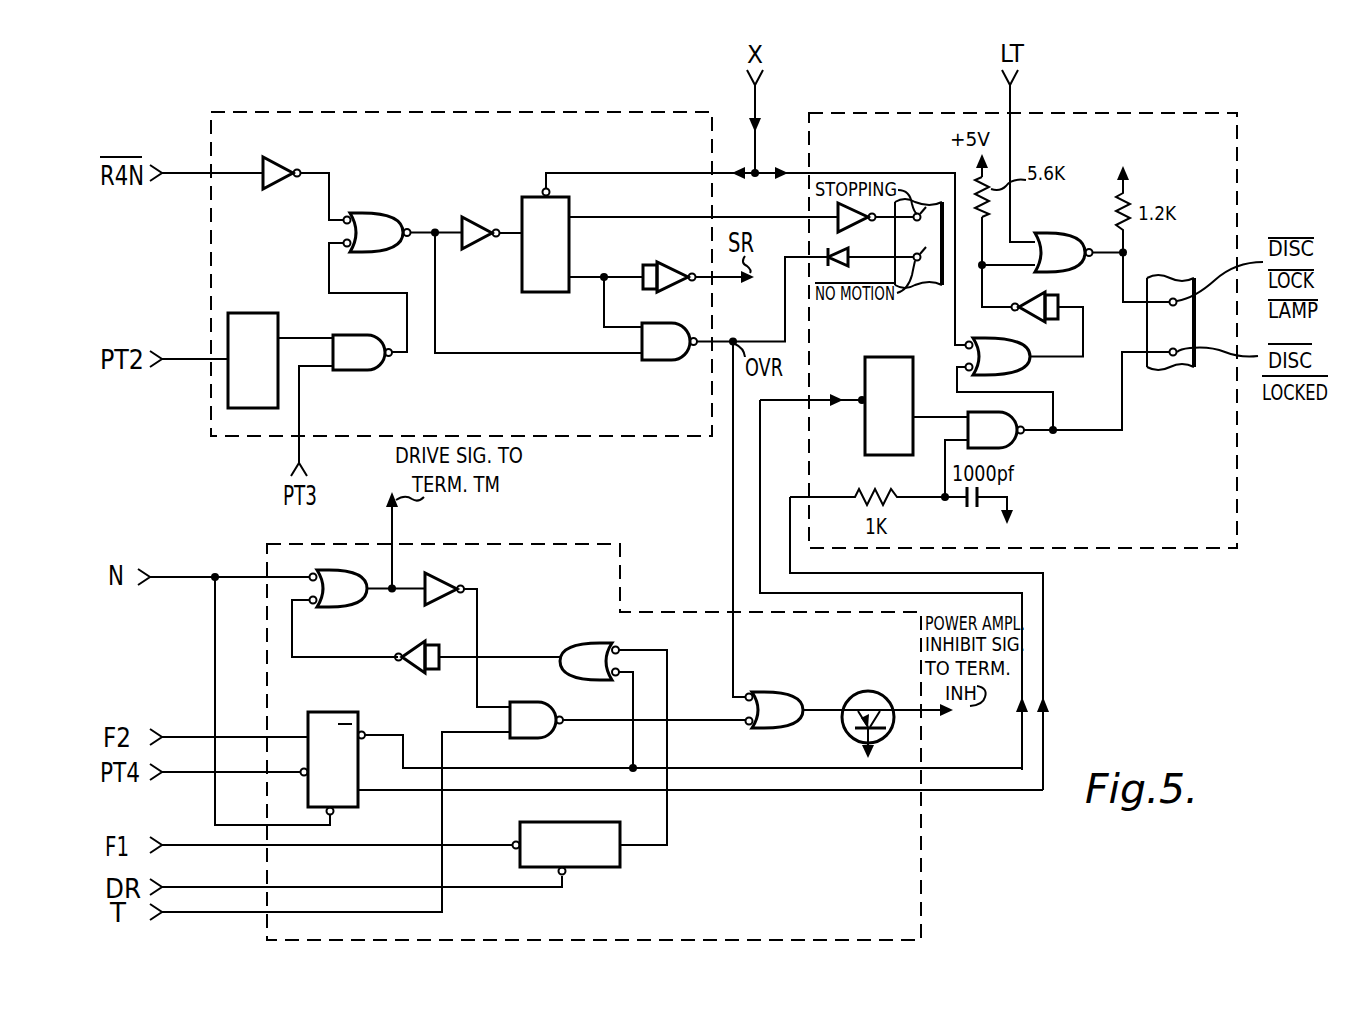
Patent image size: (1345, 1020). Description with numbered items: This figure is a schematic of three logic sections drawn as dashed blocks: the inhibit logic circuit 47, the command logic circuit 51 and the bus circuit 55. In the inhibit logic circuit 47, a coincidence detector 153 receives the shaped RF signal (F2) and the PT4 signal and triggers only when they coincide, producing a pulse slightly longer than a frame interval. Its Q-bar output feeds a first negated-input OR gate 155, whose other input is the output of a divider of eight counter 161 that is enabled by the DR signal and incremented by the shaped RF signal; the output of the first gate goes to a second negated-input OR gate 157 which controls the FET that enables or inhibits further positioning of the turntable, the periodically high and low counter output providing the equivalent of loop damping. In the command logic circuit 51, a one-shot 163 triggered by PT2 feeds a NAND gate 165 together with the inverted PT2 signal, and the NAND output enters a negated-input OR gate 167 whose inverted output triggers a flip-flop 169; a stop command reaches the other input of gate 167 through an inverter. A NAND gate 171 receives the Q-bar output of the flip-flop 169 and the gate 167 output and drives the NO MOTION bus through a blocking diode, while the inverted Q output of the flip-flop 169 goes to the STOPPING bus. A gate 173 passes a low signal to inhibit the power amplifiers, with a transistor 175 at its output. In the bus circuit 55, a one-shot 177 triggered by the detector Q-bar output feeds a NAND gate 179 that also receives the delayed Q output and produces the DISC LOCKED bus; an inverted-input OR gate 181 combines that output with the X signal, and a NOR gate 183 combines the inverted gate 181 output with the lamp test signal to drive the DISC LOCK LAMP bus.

The inhibit logic circuit 47 is at (921, 835).
The command logic circuit 51 is at (208, 240).
The bus circuit 55 is at (1237, 485).
The coincidence detector 153 is at (362, 712).
The first negated-input OR gate 155 is at (580, 644).
The second negated-input OR gate 157 is at (362, 608).
The divider of eight counter 161 is at (620, 858).
The one-shot 163 is at (264, 313).
The NAND gate 165 is at (372, 371).
The negated-input OR gate 167 is at (375, 213).
The flip-flop 169 is at (523, 196).
The NAND gate 171 is at (662, 361).
The gate 173 is at (775, 690).
The transistor 175 is at (868, 691).
The one-shot 177 is at (885, 356).
The NAND gate 179 is at (1015, 447).
The inverted-input OR gate 181 is at (1030, 372).
The NOR gate 183 is at (1061, 233).